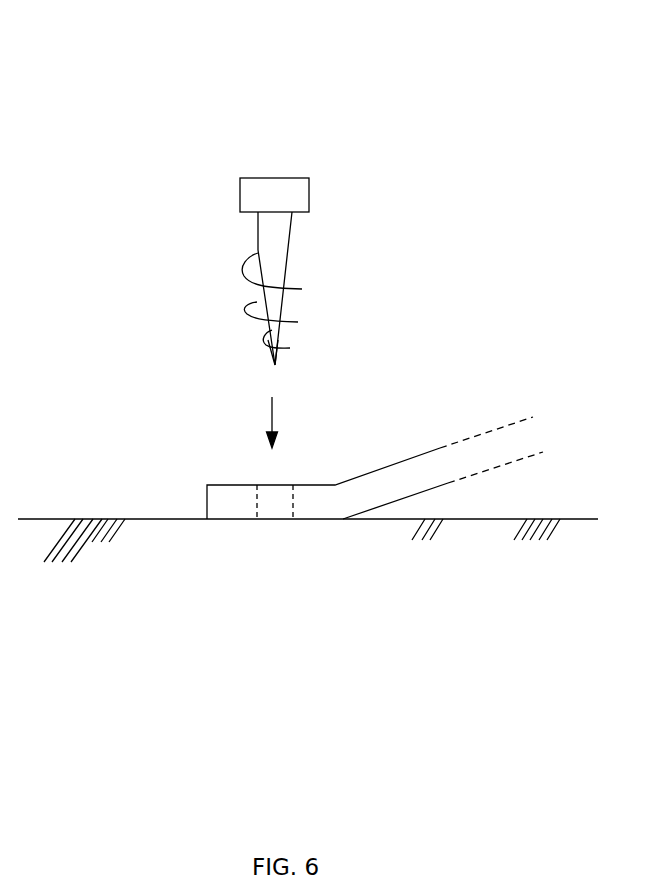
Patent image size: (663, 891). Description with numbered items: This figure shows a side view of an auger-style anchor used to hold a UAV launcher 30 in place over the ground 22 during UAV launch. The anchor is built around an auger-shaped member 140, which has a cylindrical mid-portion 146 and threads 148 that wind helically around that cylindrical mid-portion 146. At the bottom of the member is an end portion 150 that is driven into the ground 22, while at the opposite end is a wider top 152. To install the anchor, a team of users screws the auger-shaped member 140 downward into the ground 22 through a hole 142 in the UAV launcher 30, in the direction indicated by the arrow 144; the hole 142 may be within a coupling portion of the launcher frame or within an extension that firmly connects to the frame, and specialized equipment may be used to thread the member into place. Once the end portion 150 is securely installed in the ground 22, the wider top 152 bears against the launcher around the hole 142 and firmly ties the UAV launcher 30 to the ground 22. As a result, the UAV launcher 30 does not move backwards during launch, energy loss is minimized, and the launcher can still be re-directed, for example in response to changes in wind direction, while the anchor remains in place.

The auger-shaped member 140 is at (148, 225).
The wider top 152 is at (221, 174).
The cylindrical mid-portion 146 is at (258, 245).
The threads 148 is at (263, 310).
The end portion 150 is at (247, 335).
The arrow 144 is at (272, 410).
The hole 142 is at (252, 489).
The UAV launcher 30 is at (390, 468).
The ground 22 is at (330, 615).